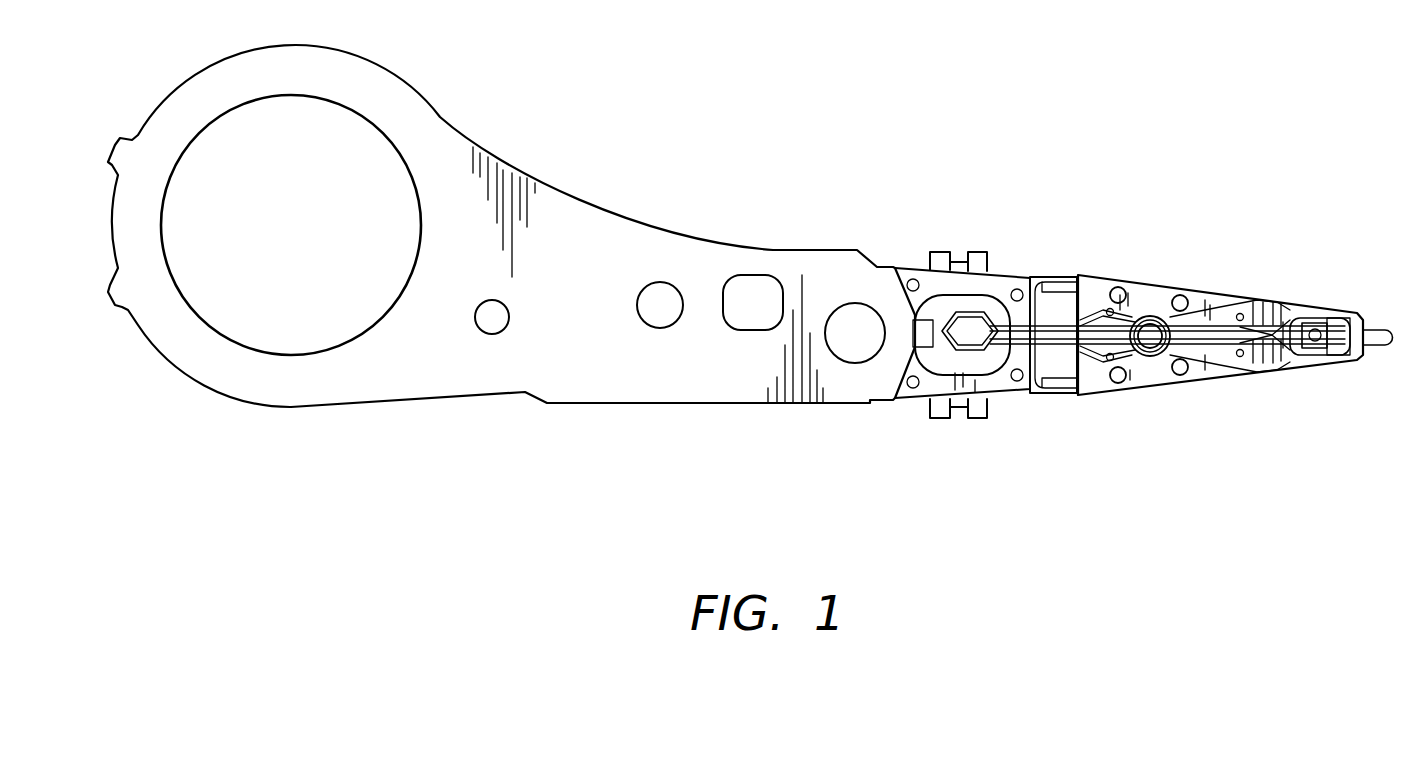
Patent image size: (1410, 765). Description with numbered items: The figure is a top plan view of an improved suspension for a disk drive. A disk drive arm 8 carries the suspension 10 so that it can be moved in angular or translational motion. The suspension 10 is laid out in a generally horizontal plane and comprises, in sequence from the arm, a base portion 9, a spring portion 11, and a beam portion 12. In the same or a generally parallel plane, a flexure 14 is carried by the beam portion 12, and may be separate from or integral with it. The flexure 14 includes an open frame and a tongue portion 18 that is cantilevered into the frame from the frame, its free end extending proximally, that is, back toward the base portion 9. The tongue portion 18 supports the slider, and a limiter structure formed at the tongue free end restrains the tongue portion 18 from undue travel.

The disk drive arm 8 is at (465, 185).
The base portion 9 is at (895, 268).
The suspension 10 is at (935, 442).
The spring portion 11 is at (1057, 398).
The beam portion 12 is at (1173, 284).
The flexure 14 is at (1288, 367).
The tongue portion 18 is at (1307, 330).